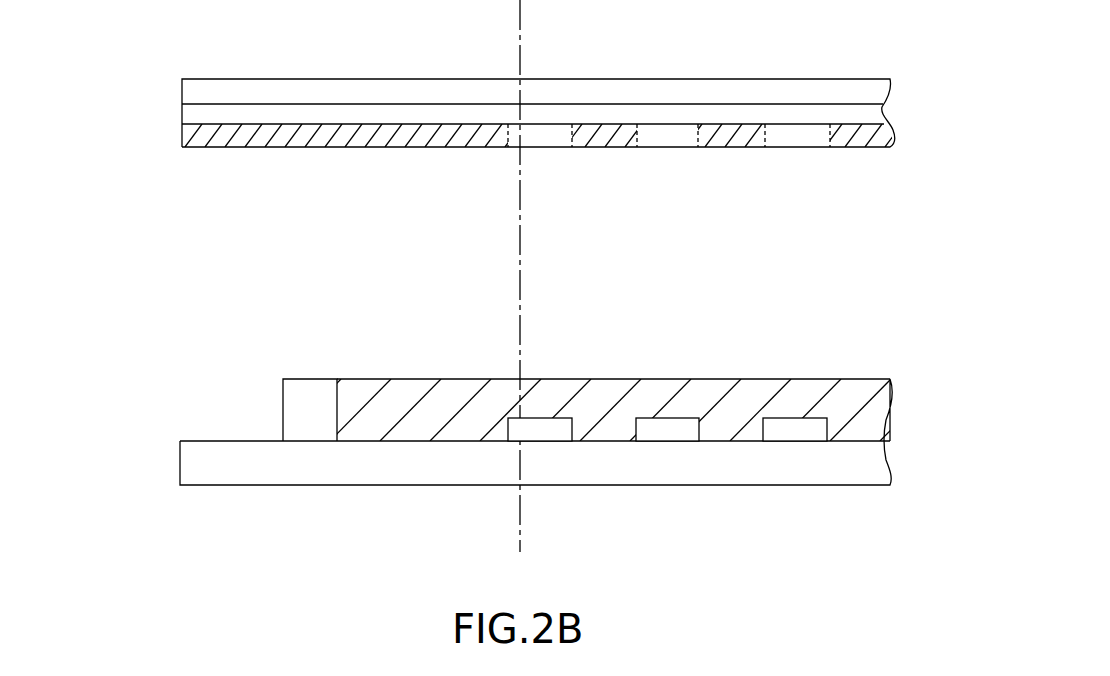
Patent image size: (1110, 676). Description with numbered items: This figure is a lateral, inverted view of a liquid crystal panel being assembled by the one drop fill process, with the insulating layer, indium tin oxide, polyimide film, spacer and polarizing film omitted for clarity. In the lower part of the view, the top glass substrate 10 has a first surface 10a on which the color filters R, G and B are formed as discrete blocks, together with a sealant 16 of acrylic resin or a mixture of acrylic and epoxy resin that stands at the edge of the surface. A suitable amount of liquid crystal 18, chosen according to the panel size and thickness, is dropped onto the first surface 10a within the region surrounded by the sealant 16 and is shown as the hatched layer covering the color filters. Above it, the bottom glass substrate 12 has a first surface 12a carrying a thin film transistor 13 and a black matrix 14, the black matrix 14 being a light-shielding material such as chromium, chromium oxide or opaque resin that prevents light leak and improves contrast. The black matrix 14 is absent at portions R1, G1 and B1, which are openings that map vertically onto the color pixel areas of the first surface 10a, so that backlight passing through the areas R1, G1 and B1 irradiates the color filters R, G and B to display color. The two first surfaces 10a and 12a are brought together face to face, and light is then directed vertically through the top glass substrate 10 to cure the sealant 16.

The top glass substrate 10 is at (257, 475).
The first surface of the top glass substrate 10a is at (222, 440).
The bottom glass substrate 12 is at (192, 91).
The first surface of the bottom glass substrate 12a is at (232, 107).
The thin film transistor 13 is at (190, 112).
The black matrix 14 is at (335, 135).
The sealant 16 is at (320, 415).
The liquid crystal 18 is at (880, 418).
The red color filter R is at (542, 430).
The green color filter G is at (682, 430).
The blue color filter B is at (795, 430).
The red opening of the black matrix R1 is at (542, 133).
The green opening of the black matrix G1 is at (683, 135).
The blue opening of the black matrix B1 is at (795, 135).